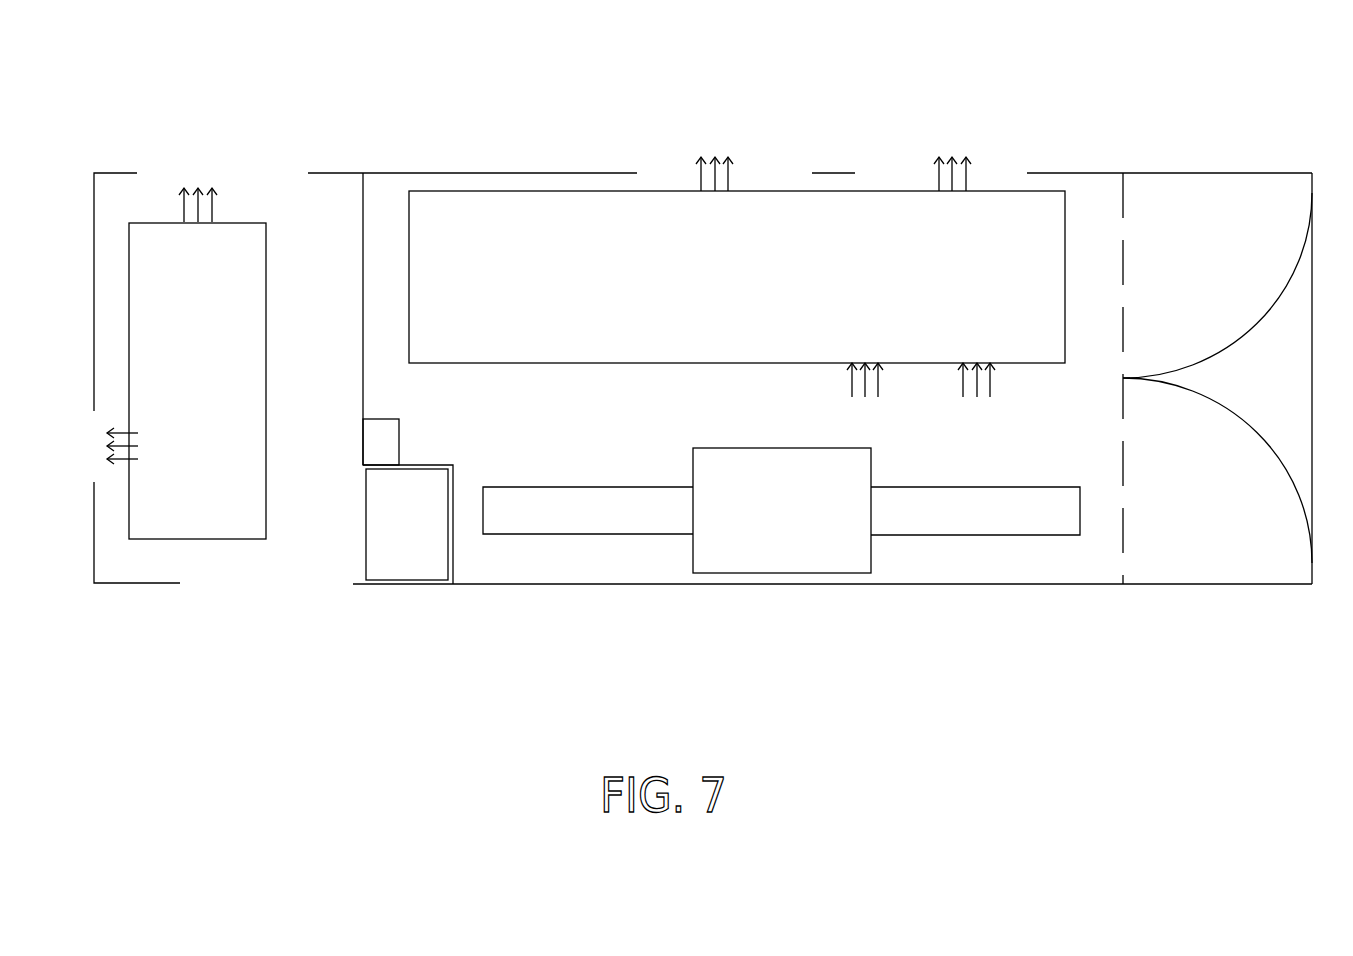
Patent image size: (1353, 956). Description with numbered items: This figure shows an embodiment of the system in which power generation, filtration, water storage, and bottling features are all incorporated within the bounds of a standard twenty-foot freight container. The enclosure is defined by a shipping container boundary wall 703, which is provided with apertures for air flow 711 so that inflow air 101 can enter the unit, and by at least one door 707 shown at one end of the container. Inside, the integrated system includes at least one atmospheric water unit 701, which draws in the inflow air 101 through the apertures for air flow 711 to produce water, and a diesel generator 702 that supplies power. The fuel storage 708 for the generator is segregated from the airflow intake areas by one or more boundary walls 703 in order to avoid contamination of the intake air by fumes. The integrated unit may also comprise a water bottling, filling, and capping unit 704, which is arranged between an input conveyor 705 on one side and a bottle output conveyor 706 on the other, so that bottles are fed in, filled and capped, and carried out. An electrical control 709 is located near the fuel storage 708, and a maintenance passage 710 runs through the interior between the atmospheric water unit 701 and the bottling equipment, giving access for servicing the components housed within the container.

The inflow air 101 is at (952, 157).
The atmospheric water unit 701 is at (746, 191).
The diesel generator 702 is at (230, 222).
The shipping container boundary wall 703 is at (527, 173).
The water bottling, filling, and capping unit 704 is at (783, 574).
The input conveyor 705 is at (622, 487).
The bottle output conveyor 706 is at (988, 487).
The door 707 is at (1217, 173).
The fuel storage 708 is at (363, 549).
The electrical control 709 is at (399, 440).
The maintenance passage 710 is at (575, 403).
The apertures for air flow 711 is at (1000, 172).